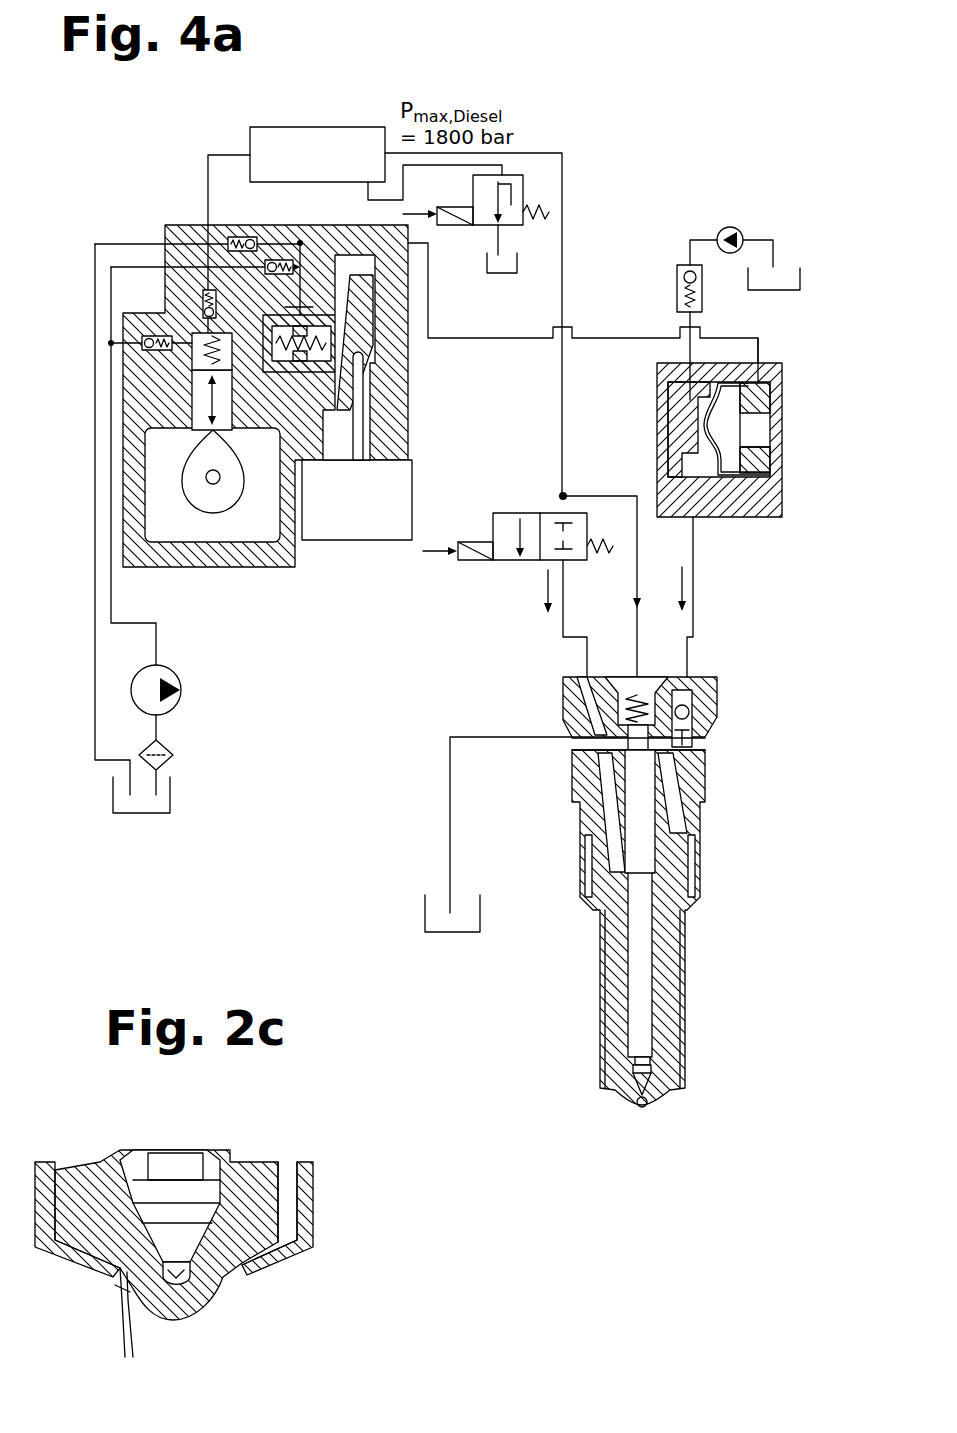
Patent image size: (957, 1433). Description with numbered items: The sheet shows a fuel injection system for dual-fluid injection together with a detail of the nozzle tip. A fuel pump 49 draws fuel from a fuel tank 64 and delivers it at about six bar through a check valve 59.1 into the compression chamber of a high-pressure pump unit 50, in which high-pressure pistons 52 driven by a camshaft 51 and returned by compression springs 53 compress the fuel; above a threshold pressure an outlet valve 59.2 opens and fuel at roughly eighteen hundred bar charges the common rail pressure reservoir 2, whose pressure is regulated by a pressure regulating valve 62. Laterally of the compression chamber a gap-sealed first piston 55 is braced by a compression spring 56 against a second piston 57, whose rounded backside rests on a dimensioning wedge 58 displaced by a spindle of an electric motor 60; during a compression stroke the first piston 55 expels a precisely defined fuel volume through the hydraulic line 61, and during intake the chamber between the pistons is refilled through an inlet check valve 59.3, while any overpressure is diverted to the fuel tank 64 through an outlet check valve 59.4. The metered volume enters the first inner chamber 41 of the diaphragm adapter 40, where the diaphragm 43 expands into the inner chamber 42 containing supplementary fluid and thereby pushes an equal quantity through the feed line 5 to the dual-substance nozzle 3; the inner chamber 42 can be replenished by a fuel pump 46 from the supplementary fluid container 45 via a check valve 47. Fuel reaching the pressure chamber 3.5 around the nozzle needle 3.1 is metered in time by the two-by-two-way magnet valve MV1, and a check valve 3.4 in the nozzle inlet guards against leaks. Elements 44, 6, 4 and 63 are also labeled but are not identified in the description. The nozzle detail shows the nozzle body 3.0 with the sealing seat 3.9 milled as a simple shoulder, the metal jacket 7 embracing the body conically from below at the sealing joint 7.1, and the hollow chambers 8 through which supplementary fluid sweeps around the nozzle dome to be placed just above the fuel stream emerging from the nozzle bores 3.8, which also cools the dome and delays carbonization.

In FIG. 4a, the common rail pressure reservoir 2 is at (275, 140).
In FIG. 4a, the pressure regulating valve 62 is at (518, 191).
In FIG. 4a, the hydraulic line 61 is at (498, 338).
In FIG. 4a, the fuel pump 46 is at (732, 227).
In FIG. 4a, the check valve 47 is at (689, 265).
In FIG. 4a, the supplementary fluid container 45 is at (800, 276).
In FIG. 4a, the diaphragm adapter 40 is at (718, 408).
In FIG. 4a, the first inner chamber 41 is at (733, 398).
In FIG. 4a, the inner chamber 42 is at (697, 397).
In FIG. 4a, the diaphragm 43 is at (708, 427).
In FIG. 4a, the plunger 44 is at (688, 443).
In FIG. 4a, the first 2/2-way valve MV1 is at (548, 513).
In FIG. 4a, the return line 6 is at (565, 633).
In FIG. 4a, the feed line 5 is at (694, 607).
In FIG. 4a, the fuel line 4 is at (640, 657).
In FIG. 4a, the dual-substance nozzle 3 is at (603, 892).
In FIG. 4a, the check valve 3.4 is at (690, 712).
In FIG. 4a, the pressure chamber 3.5 is at (622, 893).
In FIG. 4a, the high-pressure pump unit 50 is at (256, 568).
In FIG. 4a, the camshaft 51 is at (213, 495).
In FIG. 4a, the high-pressure pistons 52 is at (198, 397).
In FIG. 4a, the compression springs 53 is at (190, 352).
In FIG. 4a, the first piston 55 is at (286, 373).
In FIG. 4a, the compression spring 56 is at (352, 362).
In FIG. 4a, the second piston 57 is at (370, 352).
In FIG. 4a, the dimensioning wedge 58 is at (368, 339).
In FIG. 4a, the electric motor 60 is at (354, 541).
In FIG. 4a, the check valve 59.1 is at (126, 331).
In FIG. 4a, the outlet valve 59.2 is at (201, 282).
In FIG. 4a, the inlet check valve 59.3 is at (278, 259).
In FIG. 4a, the outlet check valve 59.4 is at (210, 228).
In FIG. 4a, the fuel line 63 is at (95, 653).
In FIG. 4a, the fuel pump 49 is at (166, 713).
In FIG. 4a, the fuel tank 64 is at (170, 795).
In FIG. 2c, the metal jacket 7 is at (306, 1186).
In FIG. 2c, the sealing joint 7.1 is at (298, 1238).
In FIG. 2c, the hollow chambers 8 is at (290, 1171).
In FIG. 2c, the nozzle body 3.0 is at (250, 1171).
In FIG. 2c, the nozzle needle 3.1 is at (179, 1165).
In FIG. 2c, the nozzle bores 3.8 is at (121, 1288).
In FIG. 2c, the sealing seat 3.9 is at (229, 1263).